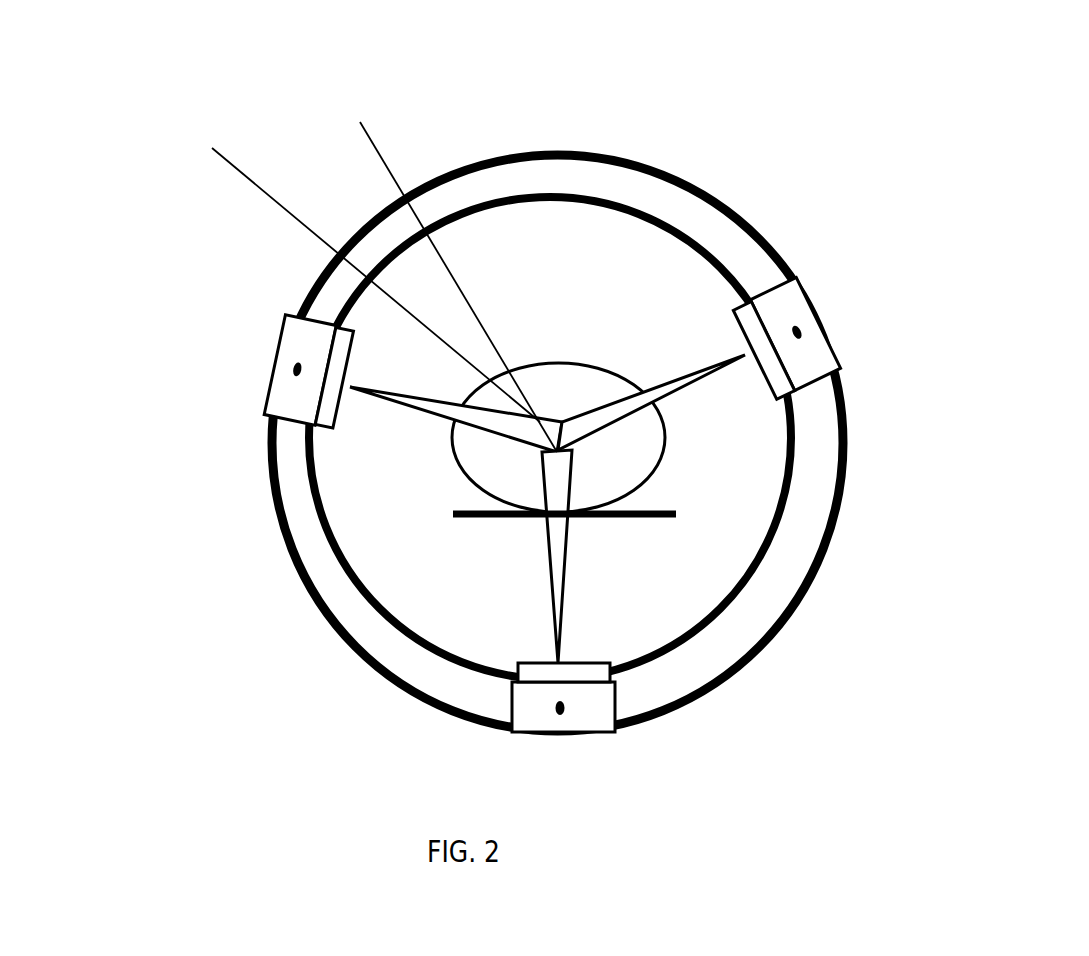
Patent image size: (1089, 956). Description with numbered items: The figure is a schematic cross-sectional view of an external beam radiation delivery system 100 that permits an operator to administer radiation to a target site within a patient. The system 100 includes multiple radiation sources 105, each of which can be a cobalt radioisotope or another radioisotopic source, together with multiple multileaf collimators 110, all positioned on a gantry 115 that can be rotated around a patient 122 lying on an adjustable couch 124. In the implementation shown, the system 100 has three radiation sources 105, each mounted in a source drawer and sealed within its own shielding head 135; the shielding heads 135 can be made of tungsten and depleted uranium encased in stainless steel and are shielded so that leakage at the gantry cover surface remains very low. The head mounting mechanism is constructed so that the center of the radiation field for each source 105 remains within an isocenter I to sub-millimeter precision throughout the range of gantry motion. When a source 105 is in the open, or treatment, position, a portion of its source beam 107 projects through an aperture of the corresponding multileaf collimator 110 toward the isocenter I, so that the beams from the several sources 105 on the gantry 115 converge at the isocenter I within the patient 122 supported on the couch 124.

The external beam radiation delivery system 100 is at (124, 187).
The radiation source 105 is at (297, 370).
The source beam 107 is at (427, 265).
The multileaf collimator 110 is at (773, 363).
The gantry 115 is at (740, 258).
The patient 122 is at (612, 370).
The adjustable couch 124 is at (645, 518).
The shielding head 135 is at (807, 285).
The isocenter I is at (367, 272).